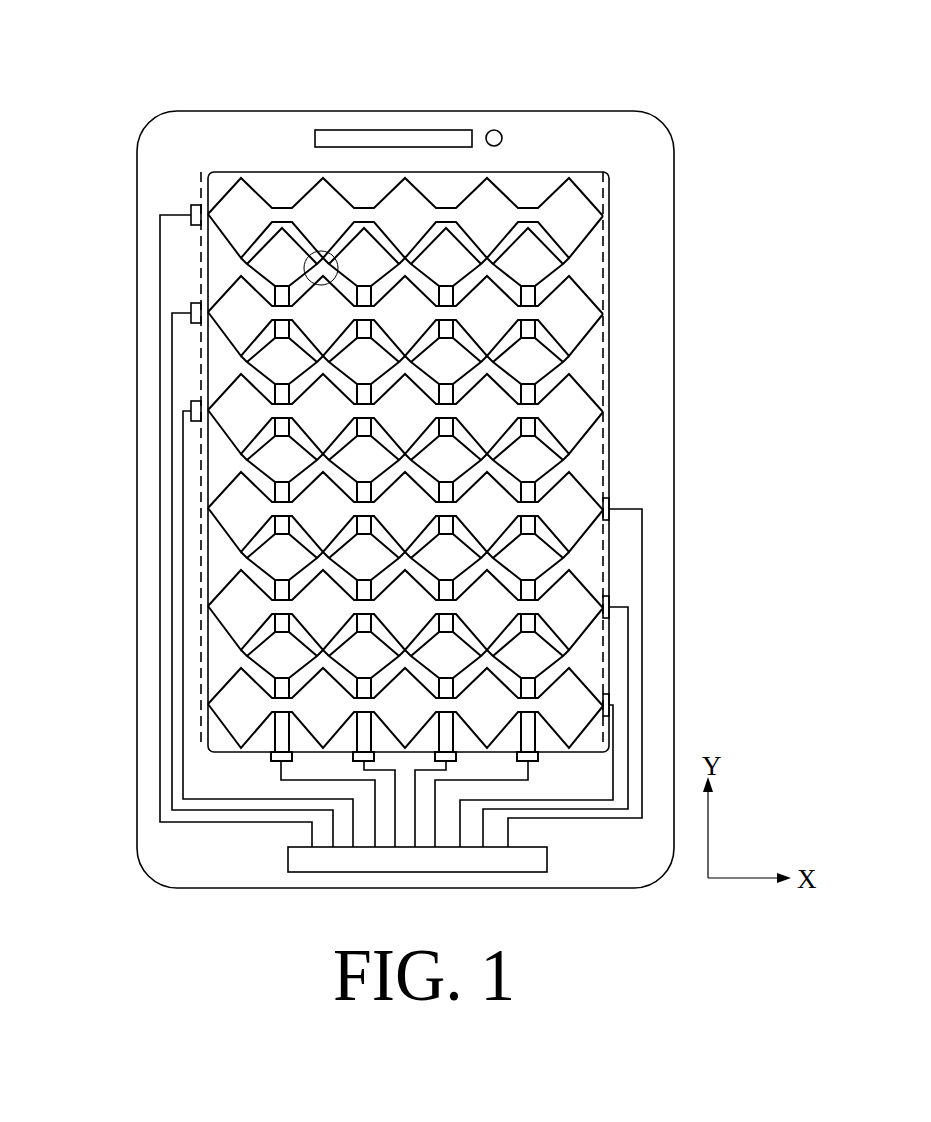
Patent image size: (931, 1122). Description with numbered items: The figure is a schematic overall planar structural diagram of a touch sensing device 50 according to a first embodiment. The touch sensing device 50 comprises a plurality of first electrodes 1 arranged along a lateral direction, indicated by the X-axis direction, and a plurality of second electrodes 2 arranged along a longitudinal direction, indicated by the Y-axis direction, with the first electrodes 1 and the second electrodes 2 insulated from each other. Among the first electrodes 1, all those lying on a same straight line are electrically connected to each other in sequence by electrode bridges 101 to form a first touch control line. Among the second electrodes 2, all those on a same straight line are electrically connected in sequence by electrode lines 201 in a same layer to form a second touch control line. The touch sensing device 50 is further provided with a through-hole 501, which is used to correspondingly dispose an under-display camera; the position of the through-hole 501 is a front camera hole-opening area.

The touch sensing device 50 is at (112, 72).
The through-hole 501 is at (318, 262).
The first electrode 1 is at (582, 220).
The second electrode 2 is at (540, 268).
The electrode bridge 101 is at (525, 313).
The electrode line 201 is at (530, 397).